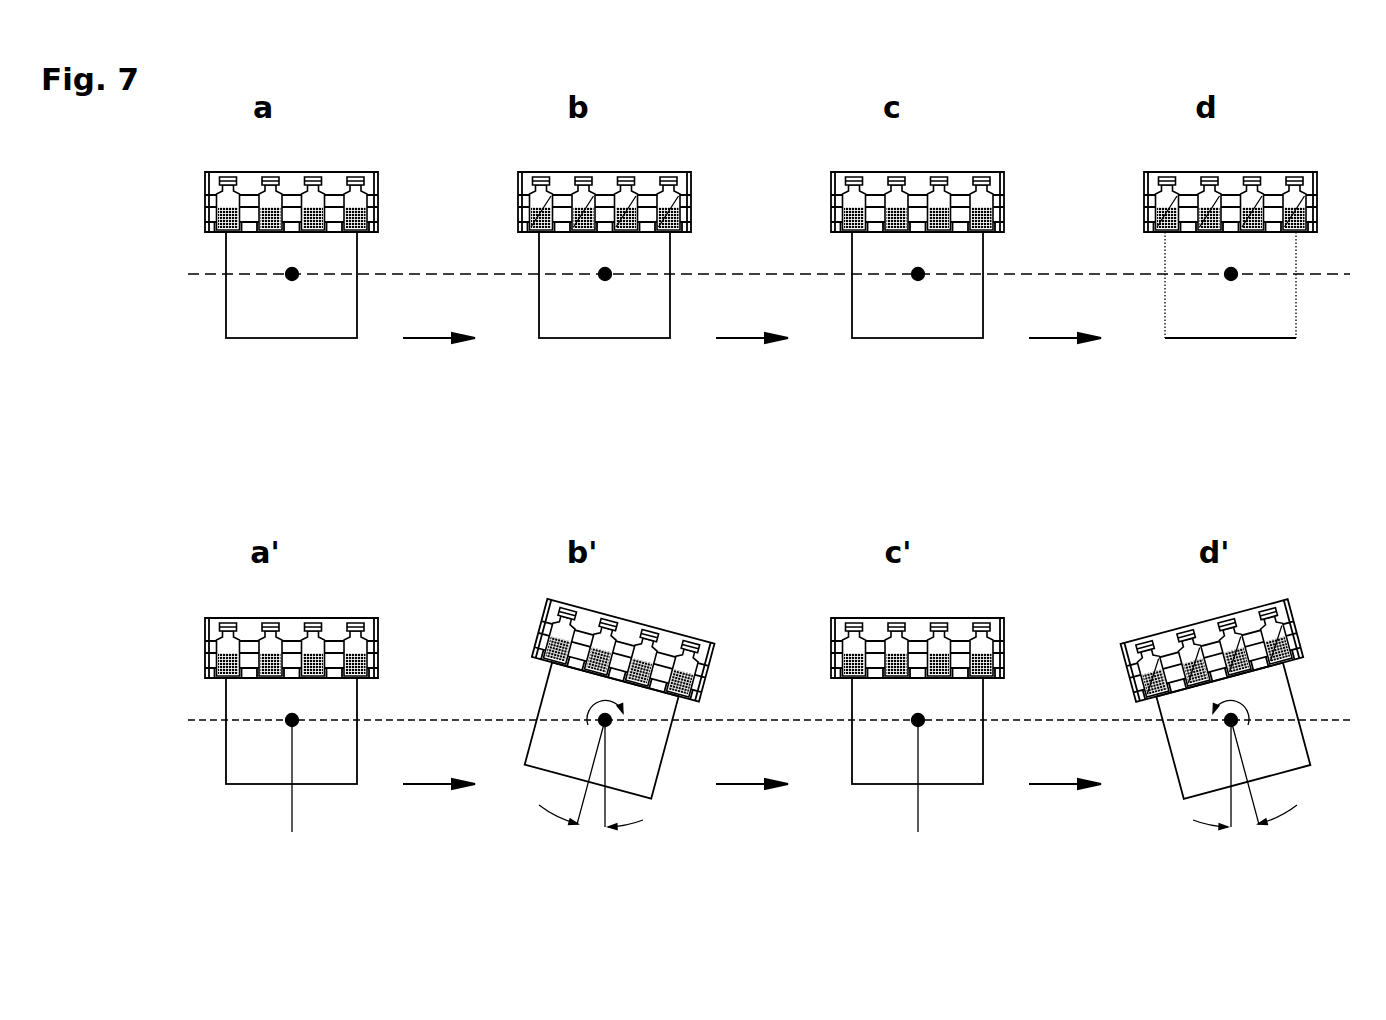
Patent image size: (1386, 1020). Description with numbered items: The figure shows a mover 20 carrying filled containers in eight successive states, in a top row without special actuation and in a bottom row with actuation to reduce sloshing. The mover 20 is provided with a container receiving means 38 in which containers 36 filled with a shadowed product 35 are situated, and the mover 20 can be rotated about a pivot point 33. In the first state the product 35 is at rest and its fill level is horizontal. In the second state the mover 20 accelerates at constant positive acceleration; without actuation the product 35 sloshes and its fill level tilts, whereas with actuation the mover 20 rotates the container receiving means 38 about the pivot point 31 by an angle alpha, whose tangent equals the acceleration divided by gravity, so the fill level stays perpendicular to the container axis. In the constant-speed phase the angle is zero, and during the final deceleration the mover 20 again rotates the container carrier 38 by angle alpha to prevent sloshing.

The mover 20 is at (786, 549).
The pivot point 31 is at (752, 599).
The pivot point 33 is at (792, 567).
The product 35 is at (754, 441).
The container 36 is at (754, 401).
The container receiving means 38 is at (754, 441).